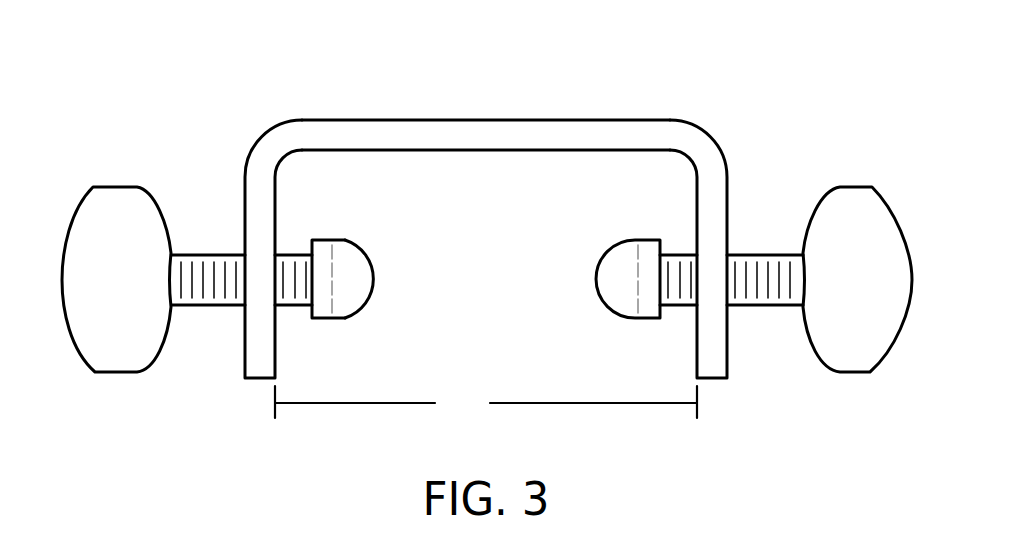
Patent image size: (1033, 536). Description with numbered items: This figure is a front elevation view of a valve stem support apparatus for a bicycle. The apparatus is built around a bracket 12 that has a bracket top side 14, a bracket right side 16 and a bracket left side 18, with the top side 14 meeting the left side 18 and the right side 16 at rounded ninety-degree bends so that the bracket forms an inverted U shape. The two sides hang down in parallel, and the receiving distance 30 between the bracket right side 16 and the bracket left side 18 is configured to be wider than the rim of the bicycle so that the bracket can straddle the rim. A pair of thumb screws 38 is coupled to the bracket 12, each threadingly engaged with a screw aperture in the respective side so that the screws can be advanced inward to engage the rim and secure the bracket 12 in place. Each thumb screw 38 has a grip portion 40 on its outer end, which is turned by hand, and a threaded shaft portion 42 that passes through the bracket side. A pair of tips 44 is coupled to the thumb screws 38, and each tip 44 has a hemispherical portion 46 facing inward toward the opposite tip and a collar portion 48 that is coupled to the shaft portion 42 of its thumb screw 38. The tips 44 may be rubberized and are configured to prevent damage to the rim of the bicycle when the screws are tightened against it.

The bracket 12 is at (505, 194).
The bracket top side 14 is at (402, 120).
The bracket right side 16 is at (708, 163).
The bracket left side 18 is at (265, 198).
The receiving distance 30 is at (486, 403).
The thumb screws 38 is at (765, 288).
The grip portion 40 is at (112, 350).
The threaded shaft portion 42 is at (202, 282).
The tips 44 is at (475, 304).
The hemispherical portion 46 is at (365, 320).
The collar portion 48 is at (370, 327).